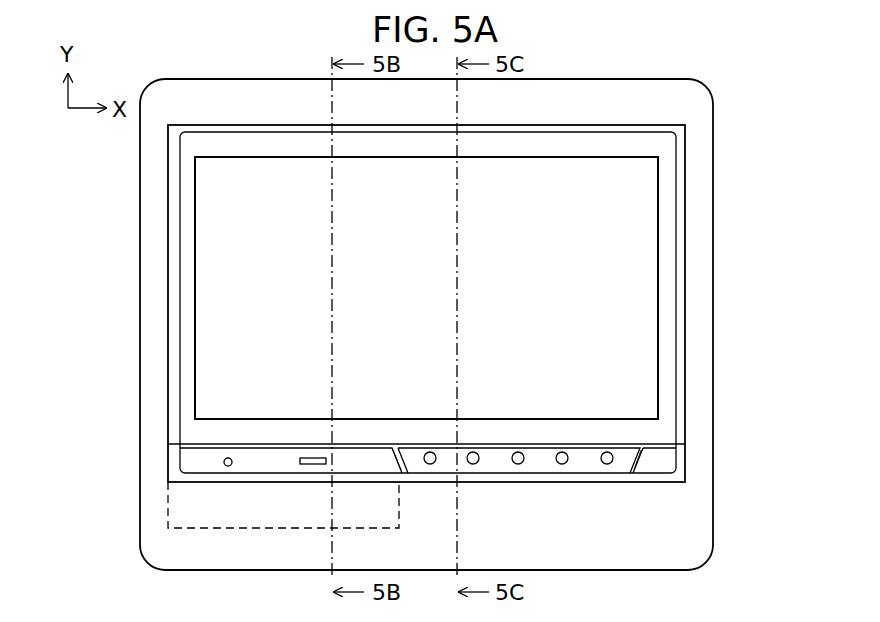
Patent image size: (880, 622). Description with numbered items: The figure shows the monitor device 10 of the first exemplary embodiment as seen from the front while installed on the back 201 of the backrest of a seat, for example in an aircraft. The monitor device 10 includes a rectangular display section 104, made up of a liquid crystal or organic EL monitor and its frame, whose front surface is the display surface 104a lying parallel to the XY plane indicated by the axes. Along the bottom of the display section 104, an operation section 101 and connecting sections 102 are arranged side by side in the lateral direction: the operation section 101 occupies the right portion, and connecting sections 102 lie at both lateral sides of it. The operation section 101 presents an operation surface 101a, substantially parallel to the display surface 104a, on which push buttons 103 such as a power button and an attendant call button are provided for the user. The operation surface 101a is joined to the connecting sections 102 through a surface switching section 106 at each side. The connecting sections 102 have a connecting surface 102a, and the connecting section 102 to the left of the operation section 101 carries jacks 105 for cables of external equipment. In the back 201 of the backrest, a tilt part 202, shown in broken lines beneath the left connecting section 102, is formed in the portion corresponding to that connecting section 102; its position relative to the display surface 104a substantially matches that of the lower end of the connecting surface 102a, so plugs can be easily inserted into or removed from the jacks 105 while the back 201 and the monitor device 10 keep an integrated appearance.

The monitor device 10 is at (575, 127).
The back of backrest 201 is at (140, 195).
The display section 104 is at (370, 302).
The display surface 104a is at (228, 297).
The jacks 105 is at (313, 458).
The tilt part 202 is at (167, 510).
The connecting section 102 is at (490, 526).
The connecting surface 102a is at (257, 460).
The operation section 101 is at (531, 526).
The operation surface 101a is at (590, 460).
The push buttons 103 is at (518, 451).
The surface switching section 106 is at (404, 452).